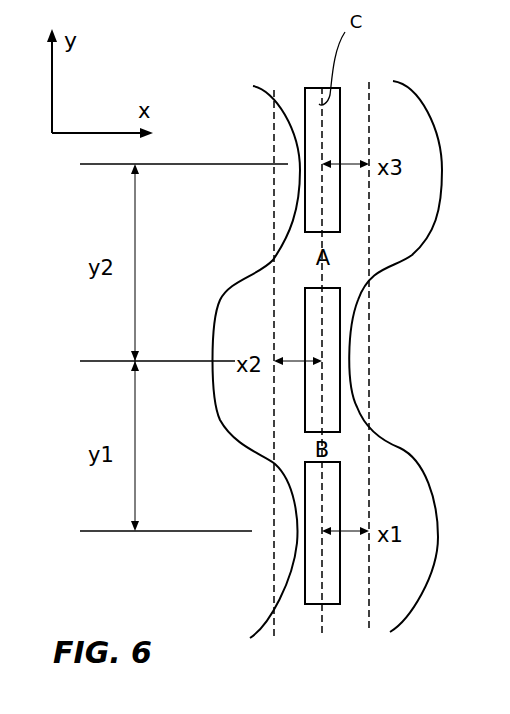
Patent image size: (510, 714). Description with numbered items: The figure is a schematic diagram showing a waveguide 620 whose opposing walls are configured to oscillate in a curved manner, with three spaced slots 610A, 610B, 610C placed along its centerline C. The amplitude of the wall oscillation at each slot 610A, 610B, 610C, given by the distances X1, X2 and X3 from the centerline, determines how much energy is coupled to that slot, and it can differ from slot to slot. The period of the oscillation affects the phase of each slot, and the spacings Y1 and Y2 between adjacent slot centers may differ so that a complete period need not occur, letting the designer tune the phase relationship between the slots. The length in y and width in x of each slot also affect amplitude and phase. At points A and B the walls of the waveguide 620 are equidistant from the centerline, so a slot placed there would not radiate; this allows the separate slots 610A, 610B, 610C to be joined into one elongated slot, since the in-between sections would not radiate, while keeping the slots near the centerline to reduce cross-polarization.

The slot 610A is at (340, 490).
The slot 610B is at (340, 359).
The slot 610C is at (341, 212).
The waveguide 620 is at (386, 646).